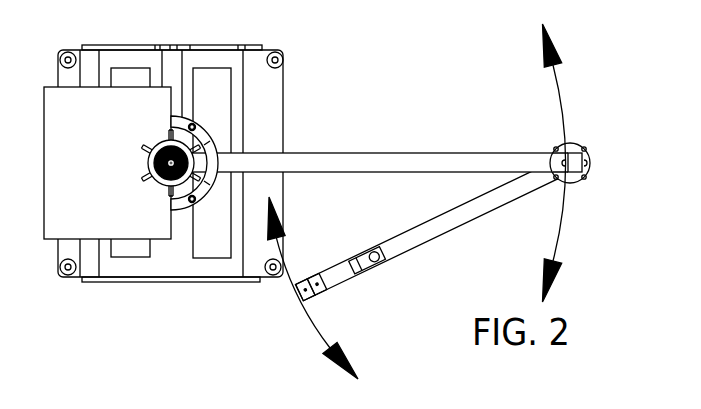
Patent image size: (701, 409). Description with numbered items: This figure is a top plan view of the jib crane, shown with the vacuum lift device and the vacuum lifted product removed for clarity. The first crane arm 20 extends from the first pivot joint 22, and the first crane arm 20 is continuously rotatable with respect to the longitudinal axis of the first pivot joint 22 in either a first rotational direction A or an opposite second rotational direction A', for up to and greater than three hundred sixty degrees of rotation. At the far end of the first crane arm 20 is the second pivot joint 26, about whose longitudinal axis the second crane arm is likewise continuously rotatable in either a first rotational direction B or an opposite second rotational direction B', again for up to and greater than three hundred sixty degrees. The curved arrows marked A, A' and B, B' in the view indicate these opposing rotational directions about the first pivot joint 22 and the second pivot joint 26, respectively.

The first crane arm 20 is at (383, 153).
The first pivot joint 22 is at (168, 133).
The second pivot joint 26 is at (580, 147).
The first rotational direction A is at (578, 142).
The second rotational direction A' is at (581, 261).
The first rotational direction B is at (310, 308).
The second rotational direction B' is at (307, 233).